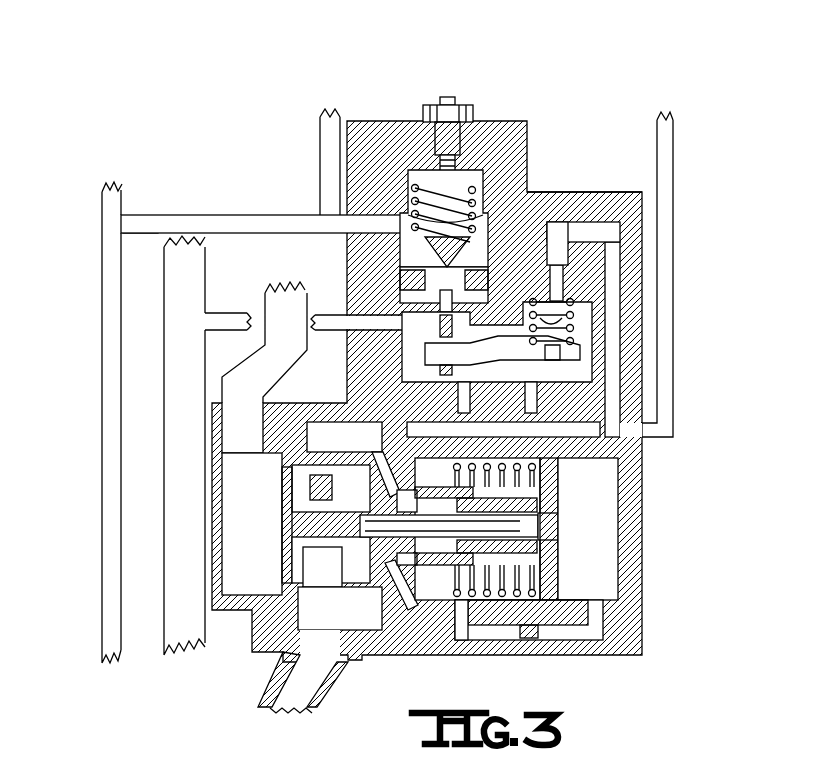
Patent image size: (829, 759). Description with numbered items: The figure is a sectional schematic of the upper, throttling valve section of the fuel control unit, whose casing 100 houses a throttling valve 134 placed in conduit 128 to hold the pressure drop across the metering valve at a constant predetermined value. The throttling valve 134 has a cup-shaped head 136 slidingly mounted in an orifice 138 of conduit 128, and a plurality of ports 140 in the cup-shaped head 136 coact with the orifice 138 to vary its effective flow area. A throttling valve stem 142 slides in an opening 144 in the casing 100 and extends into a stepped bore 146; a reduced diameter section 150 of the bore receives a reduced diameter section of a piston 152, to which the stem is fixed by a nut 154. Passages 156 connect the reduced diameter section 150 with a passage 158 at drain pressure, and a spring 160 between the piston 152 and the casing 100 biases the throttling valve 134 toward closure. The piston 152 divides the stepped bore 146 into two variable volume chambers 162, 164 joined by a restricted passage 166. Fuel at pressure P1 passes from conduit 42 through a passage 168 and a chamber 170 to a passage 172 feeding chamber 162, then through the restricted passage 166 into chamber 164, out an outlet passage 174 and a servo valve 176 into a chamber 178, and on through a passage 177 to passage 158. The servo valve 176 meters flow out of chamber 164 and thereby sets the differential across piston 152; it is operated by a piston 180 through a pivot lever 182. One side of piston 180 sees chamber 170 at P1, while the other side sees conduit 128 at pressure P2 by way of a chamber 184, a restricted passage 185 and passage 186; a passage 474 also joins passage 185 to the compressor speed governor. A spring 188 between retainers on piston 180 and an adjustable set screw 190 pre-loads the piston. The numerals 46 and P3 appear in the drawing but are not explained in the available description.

The conduit 42 is at (178, 492).
The passage 46 is at (272, 378).
The casing 100 is at (358, 370).
The conduit 128 is at (268, 684).
The throttling valve 134 is at (285, 513).
The cup-shaped head 136 is at (340, 465).
The orifice 138 is at (290, 592).
The ports 140 is at (360, 556).
The throttling valve stem 142 is at (520, 518).
The opening 144 is at (378, 462).
The stepped bore 146 is at (458, 612).
The reduced diameter section 150 is at (381, 607).
The piston 152 is at (556, 557).
The nut 154 is at (566, 516).
The passages 156 is at (407, 608).
The passage 158 is at (662, 416).
The spring 160 is at (492, 603).
The variable volume chamber 162 is at (520, 626).
The variable volume chamber 164 is at (605, 590).
The restricted passage 166 is at (572, 642).
The passage 168 is at (226, 322).
The chamber 170 is at (438, 337).
The passage 172 is at (440, 385).
The outlet passage 174 is at (612, 333).
The servo valve 176 is at (580, 323).
The passage 177 is at (537, 400).
The chamber 178 is at (582, 370).
The piston 180 is at (527, 197).
The pivot lever 182 is at (502, 355).
The chamber 184 is at (528, 177).
The restricted passage 185 is at (243, 215).
The passage 186 is at (112, 305).
The spring 188 is at (528, 150).
The adjustable set screw 190 is at (457, 104).
The passage 474 is at (332, 150).
The pressure P2 is at (304, 679).
The pressure P3 is at (242, 538).